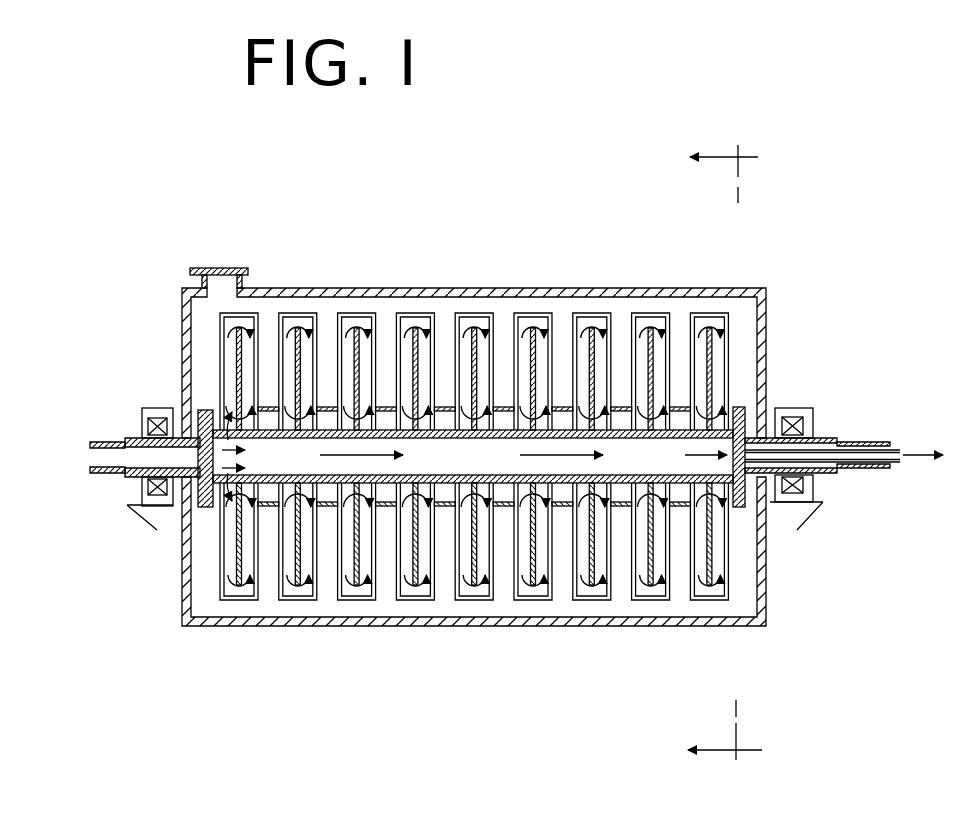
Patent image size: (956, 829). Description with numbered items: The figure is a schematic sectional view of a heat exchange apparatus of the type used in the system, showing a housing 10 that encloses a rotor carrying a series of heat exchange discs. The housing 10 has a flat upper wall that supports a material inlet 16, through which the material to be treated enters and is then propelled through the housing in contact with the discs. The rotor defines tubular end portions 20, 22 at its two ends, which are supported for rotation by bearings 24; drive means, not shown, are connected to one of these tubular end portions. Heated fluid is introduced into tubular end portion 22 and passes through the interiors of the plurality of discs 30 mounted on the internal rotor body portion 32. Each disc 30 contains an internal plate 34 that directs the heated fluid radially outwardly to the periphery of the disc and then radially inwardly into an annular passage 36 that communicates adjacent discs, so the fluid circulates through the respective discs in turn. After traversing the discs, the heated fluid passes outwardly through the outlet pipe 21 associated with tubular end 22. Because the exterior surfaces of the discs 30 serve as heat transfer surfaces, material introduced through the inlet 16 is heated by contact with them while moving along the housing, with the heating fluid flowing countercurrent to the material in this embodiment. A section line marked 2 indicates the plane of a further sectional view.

The housing 10 is at (463, 288).
The material inlet 16 is at (229, 269).
The tubular end portion 20 is at (130, 440).
The outlet pipe 21 is at (898, 452).
The tubular end portion 22 is at (855, 440).
The bearings 24 is at (158, 407).
The discs 30 is at (648, 312).
The internal rotor body portion 32 is at (428, 432).
The internal plate 34 is at (715, 355).
The annular passage 36 is at (308, 425).
The section line 2- 2 is at (740, 452).